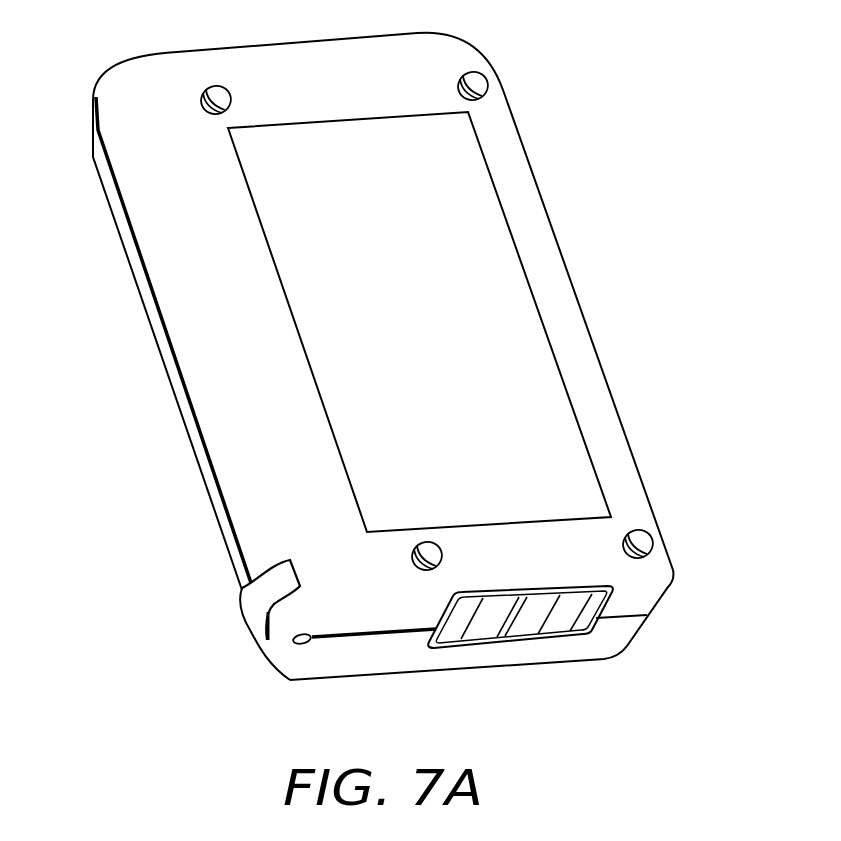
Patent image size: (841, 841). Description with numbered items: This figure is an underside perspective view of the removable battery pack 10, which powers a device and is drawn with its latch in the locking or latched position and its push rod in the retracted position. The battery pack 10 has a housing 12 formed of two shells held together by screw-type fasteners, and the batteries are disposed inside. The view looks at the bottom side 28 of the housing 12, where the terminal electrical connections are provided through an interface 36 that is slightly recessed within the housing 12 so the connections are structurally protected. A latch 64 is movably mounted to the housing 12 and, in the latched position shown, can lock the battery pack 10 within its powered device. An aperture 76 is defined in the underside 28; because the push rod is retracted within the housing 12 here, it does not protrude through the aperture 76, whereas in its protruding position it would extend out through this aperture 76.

The removable battery pack 10 is at (116, 357).
The housing 12 is at (248, 470).
The bottom side 28 is at (375, 665).
The interface 36 is at (570, 627).
The latch 64 is at (245, 607).
The aperture 76 is at (300, 645).